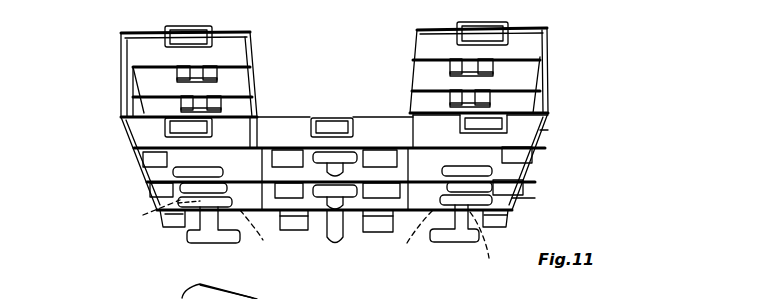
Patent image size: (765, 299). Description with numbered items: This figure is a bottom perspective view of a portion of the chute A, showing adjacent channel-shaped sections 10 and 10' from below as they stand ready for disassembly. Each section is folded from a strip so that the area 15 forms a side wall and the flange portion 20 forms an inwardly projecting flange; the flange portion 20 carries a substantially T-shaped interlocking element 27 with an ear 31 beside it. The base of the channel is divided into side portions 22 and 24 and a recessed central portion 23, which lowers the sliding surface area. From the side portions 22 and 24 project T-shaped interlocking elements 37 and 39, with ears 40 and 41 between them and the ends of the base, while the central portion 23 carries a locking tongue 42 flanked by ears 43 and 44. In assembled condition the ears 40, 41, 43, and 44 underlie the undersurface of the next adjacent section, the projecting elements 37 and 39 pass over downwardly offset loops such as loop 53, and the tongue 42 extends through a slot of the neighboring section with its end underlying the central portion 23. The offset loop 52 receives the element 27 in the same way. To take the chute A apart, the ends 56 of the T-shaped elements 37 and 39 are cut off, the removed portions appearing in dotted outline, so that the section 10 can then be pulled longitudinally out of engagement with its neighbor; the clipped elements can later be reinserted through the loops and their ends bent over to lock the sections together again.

The offset loop 52 is at (167, 33).
The flange portion 20 is at (147, 72).
The chute A is at (97, 75).
The side wall area 15 is at (133, 100).
The T-shaped interlocking element 27 is at (197, 68).
The offset loop 53 is at (173, 128).
The base side portion 22 is at (137, 135).
The central portion of base 23 is at (303, 147).
The section 10 is at (363, 161).
The section 10' is at (536, 115).
The base side portion 24 is at (535, 135).
The locking tongue 42 is at (337, 243).
The T-shaped interlocking element 37 is at (205, 202).
The T-shaped interlocking element 39 is at (470, 205).
The ear 40 is at (173, 218).
The ear 41 is at (505, 218).
The ear 43 is at (300, 217).
The ear 44 is at (378, 227).
The end of projecting element 56 is at (305, 240).
The ear 31 is at (133, 298).